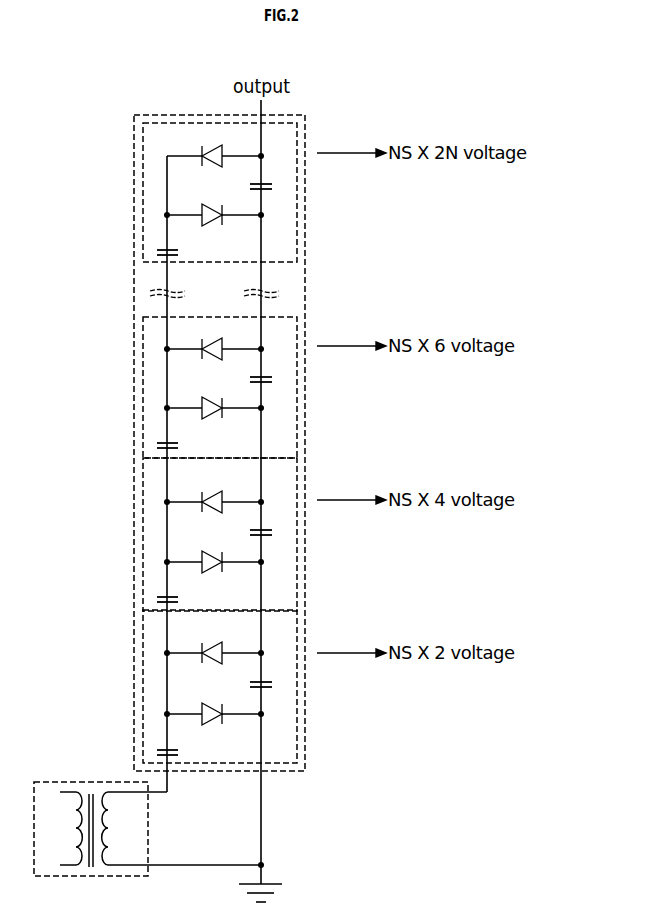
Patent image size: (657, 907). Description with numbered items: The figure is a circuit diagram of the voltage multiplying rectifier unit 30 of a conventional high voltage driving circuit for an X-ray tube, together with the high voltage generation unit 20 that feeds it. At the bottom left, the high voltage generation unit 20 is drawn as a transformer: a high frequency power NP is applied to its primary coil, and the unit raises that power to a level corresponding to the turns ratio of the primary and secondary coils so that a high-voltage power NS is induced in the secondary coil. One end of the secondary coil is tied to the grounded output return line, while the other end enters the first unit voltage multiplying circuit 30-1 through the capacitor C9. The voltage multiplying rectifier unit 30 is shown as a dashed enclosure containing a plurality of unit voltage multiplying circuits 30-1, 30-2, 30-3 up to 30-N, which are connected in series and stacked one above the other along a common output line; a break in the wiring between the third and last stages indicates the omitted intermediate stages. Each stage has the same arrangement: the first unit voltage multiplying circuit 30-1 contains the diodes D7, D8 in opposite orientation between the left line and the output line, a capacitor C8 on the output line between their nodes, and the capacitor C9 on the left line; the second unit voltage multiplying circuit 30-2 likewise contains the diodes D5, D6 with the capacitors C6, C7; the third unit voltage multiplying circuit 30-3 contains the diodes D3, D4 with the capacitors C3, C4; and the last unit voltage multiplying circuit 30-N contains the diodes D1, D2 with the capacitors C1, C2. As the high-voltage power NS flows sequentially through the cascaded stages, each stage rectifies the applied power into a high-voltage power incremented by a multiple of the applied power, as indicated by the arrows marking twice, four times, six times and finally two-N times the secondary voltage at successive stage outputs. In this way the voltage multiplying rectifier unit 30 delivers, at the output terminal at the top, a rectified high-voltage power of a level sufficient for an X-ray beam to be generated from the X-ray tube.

The voltage multiplying rectifier unit 30 is at (152, 113).
The unit voltage multiplying circuit 30-N is at (142, 185).
The unit voltage multiplying circuit 30-3 is at (142, 389).
The unit voltage multiplying circuit 30-2 is at (142, 542).
The unit voltage multiplying circuit 30-1 is at (142, 689).
The high voltage generation unit 20 is at (147, 805).
The diode D1 is at (214, 146).
The diode D2 is at (214, 204).
The diode D3 is at (214, 339).
The diode D4 is at (214, 397).
The diode D5 is at (214, 492).
The diode D6 is at (214, 551).
The diode D7 is at (214, 643).
The diode D8 is at (214, 703).
The capacitor C1 is at (266, 176).
The capacitor C2 is at (174, 242).
The capacitor C3 is at (266, 369).
The capacitor C4 is at (174, 435).
The capacitor C6 is at (266, 522).
The capacitor C7 is at (174, 589).
The capacitor C8 is at (266, 674).
The capacitor C9 is at (174, 742).
The high frequency power NP is at (62, 828).
The high-voltage power NS is at (181, 828).